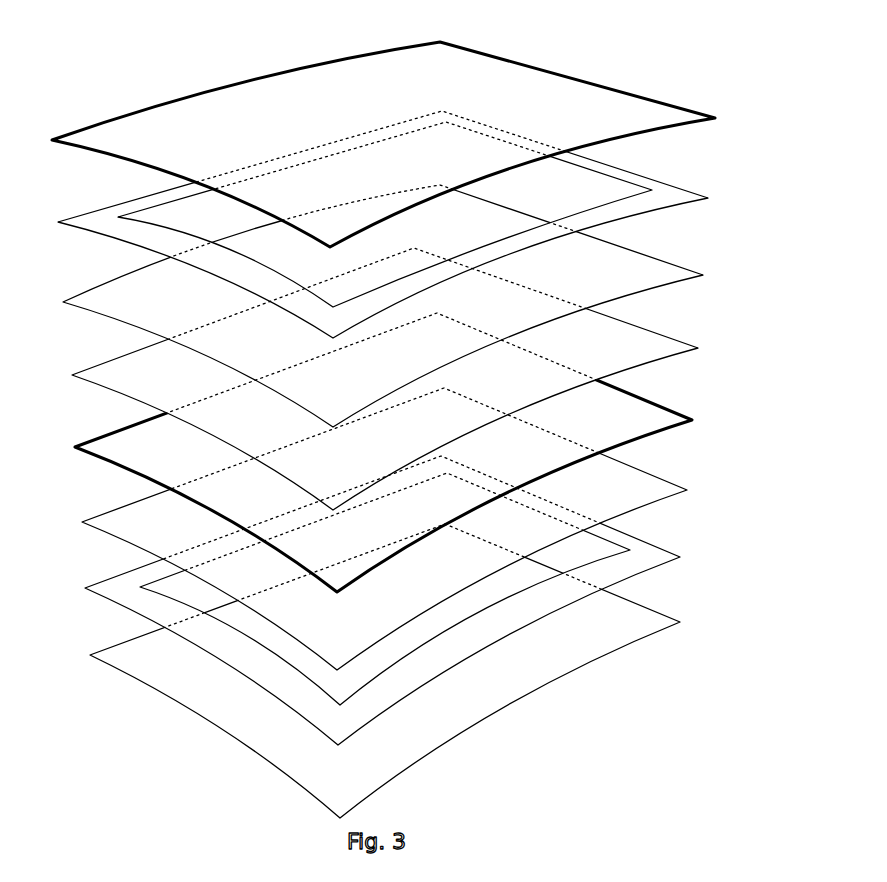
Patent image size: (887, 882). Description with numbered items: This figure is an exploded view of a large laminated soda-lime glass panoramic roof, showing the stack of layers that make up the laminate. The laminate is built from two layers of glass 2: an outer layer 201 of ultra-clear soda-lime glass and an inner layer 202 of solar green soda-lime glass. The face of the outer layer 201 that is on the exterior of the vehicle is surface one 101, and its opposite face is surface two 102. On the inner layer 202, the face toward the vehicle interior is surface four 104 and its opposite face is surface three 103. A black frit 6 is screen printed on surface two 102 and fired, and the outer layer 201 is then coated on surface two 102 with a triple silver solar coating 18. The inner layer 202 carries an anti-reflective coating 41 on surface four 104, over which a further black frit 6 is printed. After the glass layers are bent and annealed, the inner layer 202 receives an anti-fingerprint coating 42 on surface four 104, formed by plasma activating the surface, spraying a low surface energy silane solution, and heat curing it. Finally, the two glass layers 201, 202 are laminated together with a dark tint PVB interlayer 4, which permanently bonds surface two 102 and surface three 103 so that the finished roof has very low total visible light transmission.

The glass 2 is at (382, 308).
The outer layer 201 is at (137, 112).
The inner layer 202 is at (77, 447).
The surface one 101 is at (268, 93).
The surface two 102 is at (632, 144).
The surface three 103 is at (256, 534).
The surface four 104 is at (307, 579).
The bonding/adhesive layer (interlayer) 4 is at (78, 376).
The obscuration/black frit 6 is at (667, 211).
The coating 18 is at (490, 345).
The anti-reflective coating 41 is at (668, 502).
The anti-fingerprint coating 42 is at (202, 712).